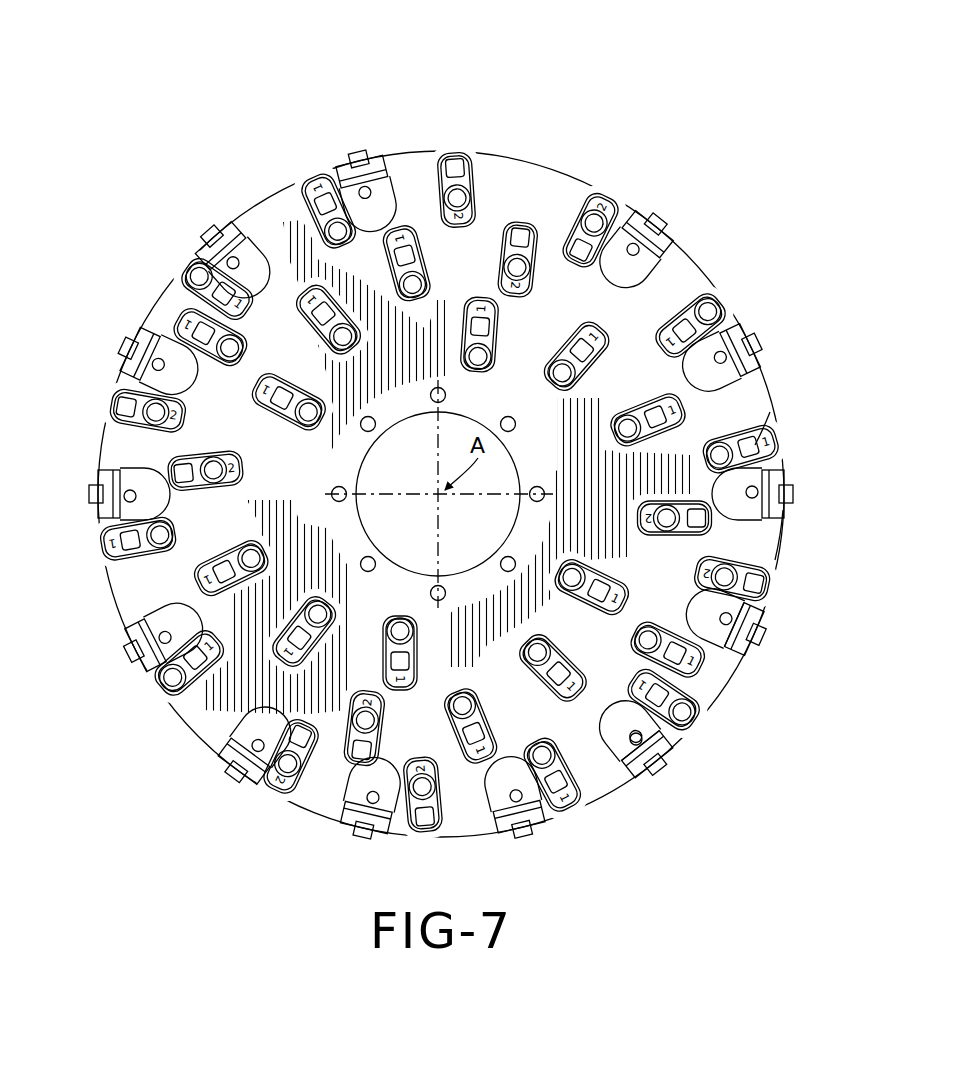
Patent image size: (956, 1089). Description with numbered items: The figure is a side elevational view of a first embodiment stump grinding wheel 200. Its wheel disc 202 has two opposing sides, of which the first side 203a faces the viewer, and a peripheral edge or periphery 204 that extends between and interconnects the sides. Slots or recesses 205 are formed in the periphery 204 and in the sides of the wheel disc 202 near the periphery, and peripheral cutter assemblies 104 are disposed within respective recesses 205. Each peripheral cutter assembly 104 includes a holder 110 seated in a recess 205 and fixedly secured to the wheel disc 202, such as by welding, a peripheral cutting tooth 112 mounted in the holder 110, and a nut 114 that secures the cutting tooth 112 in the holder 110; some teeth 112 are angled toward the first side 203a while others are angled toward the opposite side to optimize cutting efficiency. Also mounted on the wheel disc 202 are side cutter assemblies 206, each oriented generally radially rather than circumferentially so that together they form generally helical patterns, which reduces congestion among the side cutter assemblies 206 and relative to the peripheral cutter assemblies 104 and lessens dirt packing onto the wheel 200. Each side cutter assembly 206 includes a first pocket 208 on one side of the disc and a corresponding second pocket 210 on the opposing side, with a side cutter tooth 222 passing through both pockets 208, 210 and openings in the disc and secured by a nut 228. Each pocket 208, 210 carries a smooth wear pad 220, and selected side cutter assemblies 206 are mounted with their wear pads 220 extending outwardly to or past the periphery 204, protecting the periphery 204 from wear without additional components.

The stump grinding wheel 200 is at (78, 105).
The wheel disc 202 is at (700, 258).
The first side 203a is at (748, 542).
The periphery 204 is at (752, 408).
The recesses 205 is at (712, 375).
The side cutter assembly 206 is at (432, 202).
The first pocket 208 is at (243, 300).
The second pocket 210 is at (474, 175).
The wear pad 220 is at (135, 540).
The side cutter tooth 222 is at (156, 412).
The nut 228 is at (142, 392).
The holder 110 is at (748, 340).
The peripheral cutter assembly 104 is at (772, 350).
The peripheral cutting tooth 112 is at (752, 650).
The nut 114 is at (635, 745).